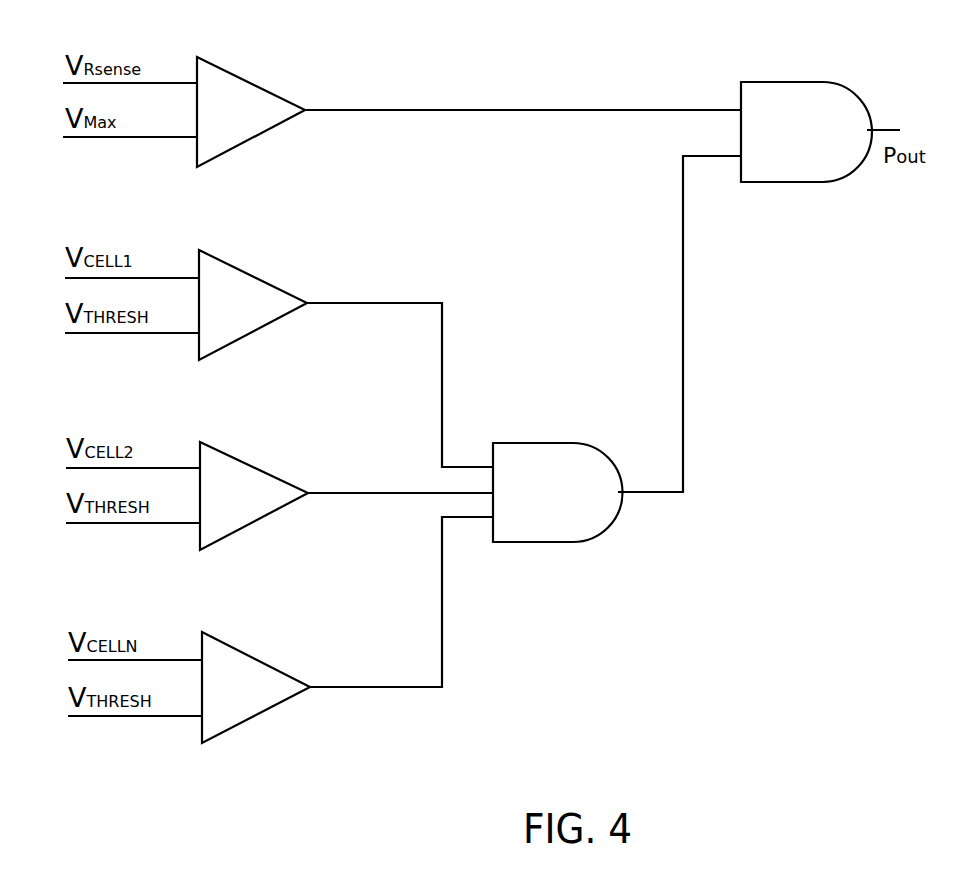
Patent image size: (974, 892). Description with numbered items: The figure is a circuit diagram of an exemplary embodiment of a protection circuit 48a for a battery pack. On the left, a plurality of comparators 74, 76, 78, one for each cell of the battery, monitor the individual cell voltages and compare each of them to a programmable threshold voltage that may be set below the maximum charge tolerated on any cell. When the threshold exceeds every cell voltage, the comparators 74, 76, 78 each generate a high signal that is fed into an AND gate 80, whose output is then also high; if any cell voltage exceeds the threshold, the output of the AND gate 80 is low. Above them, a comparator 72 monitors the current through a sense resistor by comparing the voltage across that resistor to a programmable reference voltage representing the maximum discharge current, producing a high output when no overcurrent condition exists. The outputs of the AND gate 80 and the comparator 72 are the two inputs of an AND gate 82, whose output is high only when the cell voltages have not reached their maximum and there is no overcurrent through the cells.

The comparator 72 is at (230, 70).
The comparator 74 is at (232, 263).
The comparator 76 is at (228, 453).
The comparator 78 is at (227, 643).
The AND gate 80 is at (567, 442).
The AND gate 82 is at (758, 82).
The protection circuit 48a is at (738, 438).